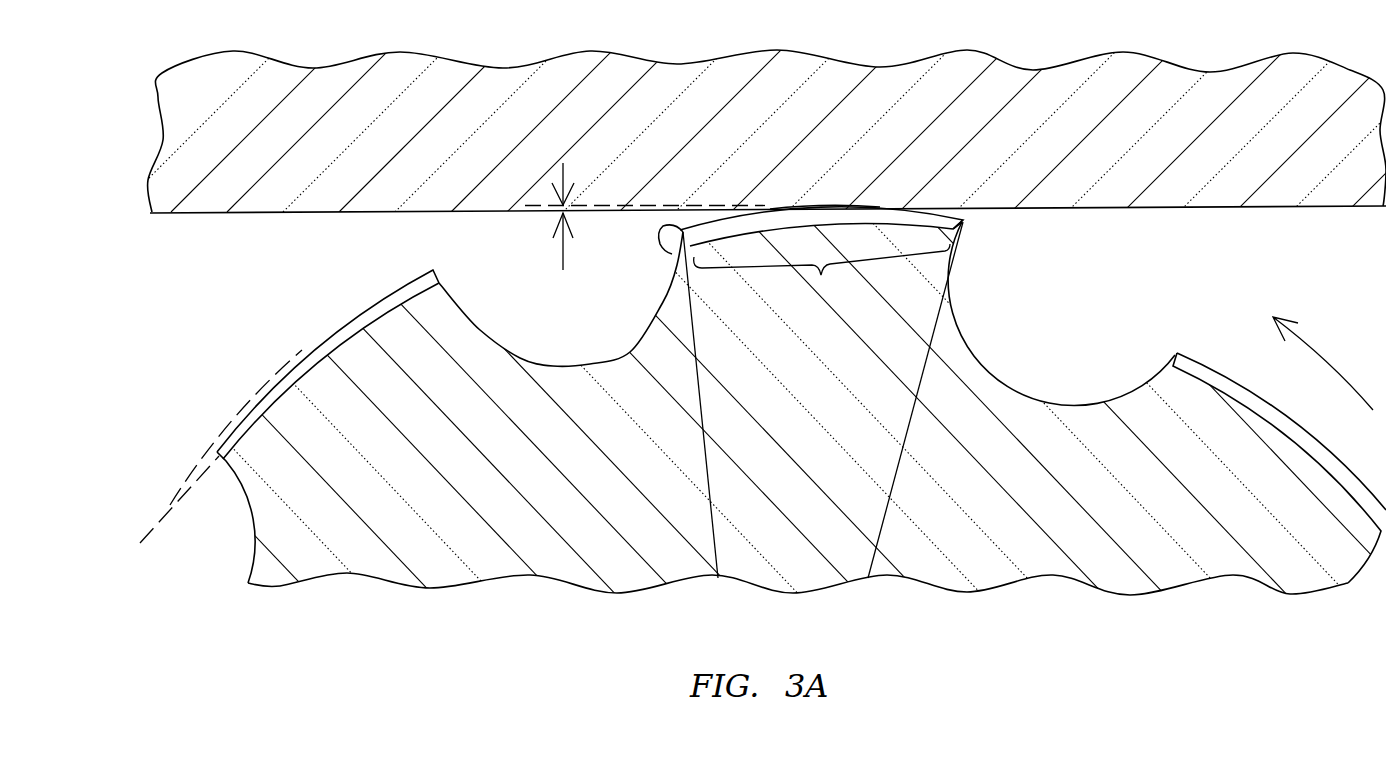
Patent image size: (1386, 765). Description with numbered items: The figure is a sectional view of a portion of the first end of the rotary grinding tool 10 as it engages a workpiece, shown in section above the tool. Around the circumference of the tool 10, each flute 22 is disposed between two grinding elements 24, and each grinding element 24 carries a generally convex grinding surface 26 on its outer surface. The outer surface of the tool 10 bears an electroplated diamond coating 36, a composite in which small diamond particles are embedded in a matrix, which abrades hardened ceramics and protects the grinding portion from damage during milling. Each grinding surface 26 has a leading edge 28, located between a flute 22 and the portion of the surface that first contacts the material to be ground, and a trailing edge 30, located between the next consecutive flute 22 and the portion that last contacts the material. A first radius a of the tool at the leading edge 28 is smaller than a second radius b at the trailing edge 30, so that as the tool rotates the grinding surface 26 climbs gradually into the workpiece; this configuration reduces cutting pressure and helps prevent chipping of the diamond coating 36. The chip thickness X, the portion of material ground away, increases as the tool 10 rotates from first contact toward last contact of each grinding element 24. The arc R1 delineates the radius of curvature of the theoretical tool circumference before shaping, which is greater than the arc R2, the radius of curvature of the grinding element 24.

The rotary grinding tool 10 is at (693, 400).
The flute 22 is at (575, 363).
The grinding element 24 is at (821, 275).
The grinding surface 26 is at (830, 208).
The leading edge 28 is at (660, 238).
The trailing edge 30 is at (963, 217).
The electroplated diamond coating 36 is at (800, 212).
The chip thickness X is at (563, 262).
The first radius a is at (700, 403).
The second radius b is at (913, 397).
The arc R1 is at (172, 495).
The arc R2 is at (162, 535).